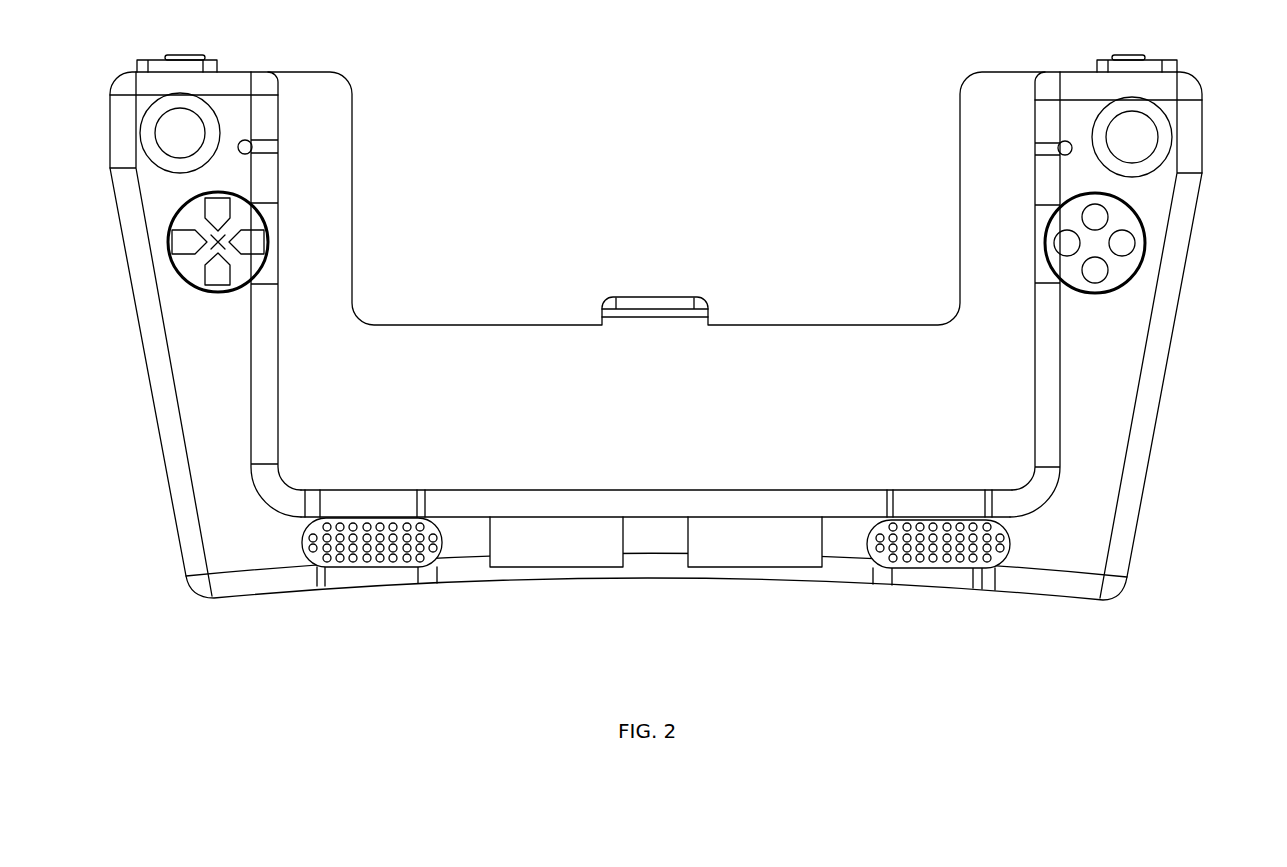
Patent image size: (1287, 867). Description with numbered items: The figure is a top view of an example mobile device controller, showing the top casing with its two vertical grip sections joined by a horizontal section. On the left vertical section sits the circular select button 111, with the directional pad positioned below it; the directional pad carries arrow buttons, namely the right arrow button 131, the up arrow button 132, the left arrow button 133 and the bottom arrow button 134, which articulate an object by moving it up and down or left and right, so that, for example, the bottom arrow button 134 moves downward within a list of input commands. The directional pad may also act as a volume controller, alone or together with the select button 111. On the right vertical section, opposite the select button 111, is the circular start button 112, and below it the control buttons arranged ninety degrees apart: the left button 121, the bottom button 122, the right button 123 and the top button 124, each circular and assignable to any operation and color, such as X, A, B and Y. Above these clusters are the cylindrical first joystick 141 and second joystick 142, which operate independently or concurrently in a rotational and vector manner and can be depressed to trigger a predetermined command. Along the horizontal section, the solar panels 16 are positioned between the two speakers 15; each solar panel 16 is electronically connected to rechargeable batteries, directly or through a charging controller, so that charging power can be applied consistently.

The speaker 15 is at (353, 557).
The solar panel 16 is at (530, 548).
The select button 111 is at (250, 140).
The start button 112 is at (1063, 145).
The left button 121 is at (1067, 243).
The bottom button 122 is at (1095, 277).
The right button 123 is at (1123, 243).
The top button 124 is at (1093, 215).
The right arrow button 131 is at (190, 261).
The up arrow button 132 is at (215, 282).
The left arrow button 133 is at (242, 240).
The bottom arrow button 134 is at (217, 212).
The first joystick 141 is at (157, 138).
The second joystick 142 is at (1152, 132).